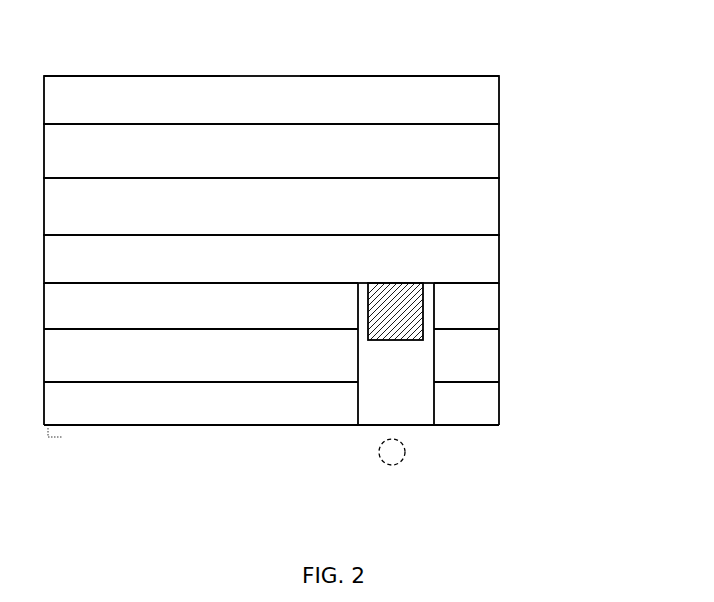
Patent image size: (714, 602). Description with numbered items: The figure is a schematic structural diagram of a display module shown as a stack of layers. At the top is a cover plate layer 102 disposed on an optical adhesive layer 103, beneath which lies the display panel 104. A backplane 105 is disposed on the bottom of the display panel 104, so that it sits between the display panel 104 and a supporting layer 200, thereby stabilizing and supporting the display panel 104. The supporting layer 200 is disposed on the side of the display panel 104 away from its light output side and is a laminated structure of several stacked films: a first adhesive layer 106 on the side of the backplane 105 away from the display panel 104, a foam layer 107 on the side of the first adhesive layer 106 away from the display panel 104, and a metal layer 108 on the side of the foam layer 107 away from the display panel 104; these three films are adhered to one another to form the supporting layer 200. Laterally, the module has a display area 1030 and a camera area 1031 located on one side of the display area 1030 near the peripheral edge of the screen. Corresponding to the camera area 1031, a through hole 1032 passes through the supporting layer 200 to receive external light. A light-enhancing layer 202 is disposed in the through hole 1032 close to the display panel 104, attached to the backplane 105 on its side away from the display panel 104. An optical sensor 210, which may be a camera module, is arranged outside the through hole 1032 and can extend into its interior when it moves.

The cover plate layer 102 is at (487, 94).
The optical adhesive layer 103 is at (487, 142).
The display panel 104 is at (487, 194).
The backplane 105 is at (487, 256).
The first adhesive layer 106 is at (487, 304).
The foam layer 107 is at (487, 359).
The metal layer 108 is at (303, 403).
The supporting layer 200 is at (333, 354).
The light-enhancing layer 202 is at (393, 320).
The optical sensor 210 is at (401, 461).
The display area 1030 is at (197, 62).
The camera area 1031 is at (356, 67).
The through hole 1032 is at (420, 380).